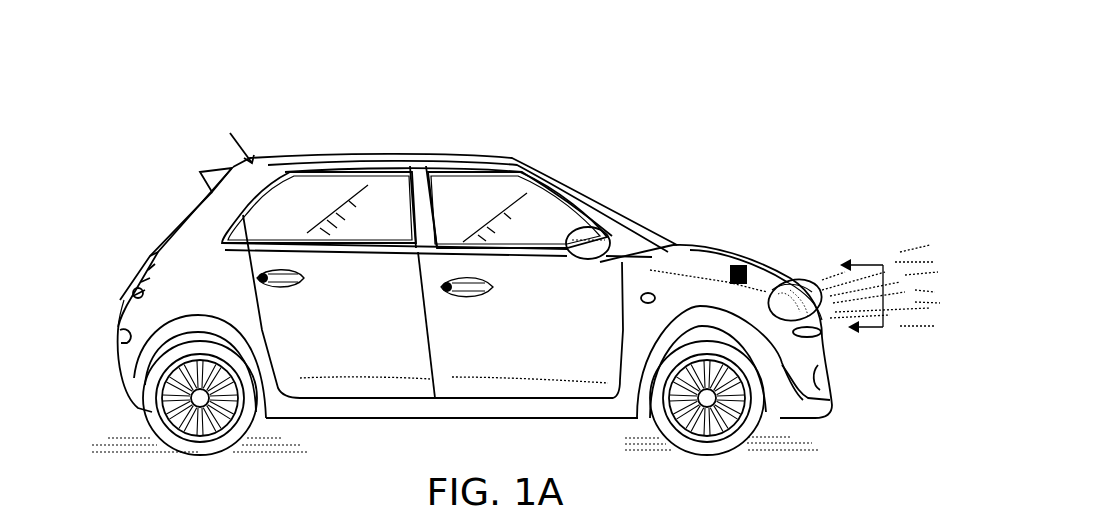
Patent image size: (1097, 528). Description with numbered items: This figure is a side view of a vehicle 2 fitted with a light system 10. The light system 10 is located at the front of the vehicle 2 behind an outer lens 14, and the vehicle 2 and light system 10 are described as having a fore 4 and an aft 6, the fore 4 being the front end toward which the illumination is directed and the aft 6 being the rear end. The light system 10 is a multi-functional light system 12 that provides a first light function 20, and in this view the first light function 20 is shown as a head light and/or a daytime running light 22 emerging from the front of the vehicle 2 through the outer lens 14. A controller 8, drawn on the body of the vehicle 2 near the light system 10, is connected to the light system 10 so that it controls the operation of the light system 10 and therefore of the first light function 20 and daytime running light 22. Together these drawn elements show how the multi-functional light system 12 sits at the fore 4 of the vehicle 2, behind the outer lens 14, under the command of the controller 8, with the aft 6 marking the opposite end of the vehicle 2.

The vehicle 2 is at (657, 120).
The fore 4 is at (900, 186).
The aft 6 is at (103, 281).
The controller 8 is at (742, 265).
The light system 10 is at (846, 217).
The multi-functional light system 12 is at (808, 256).
The outer lens 14 is at (824, 321).
The first light function 20 is at (808, 310).
The daytime running light 22 is at (881, 285).